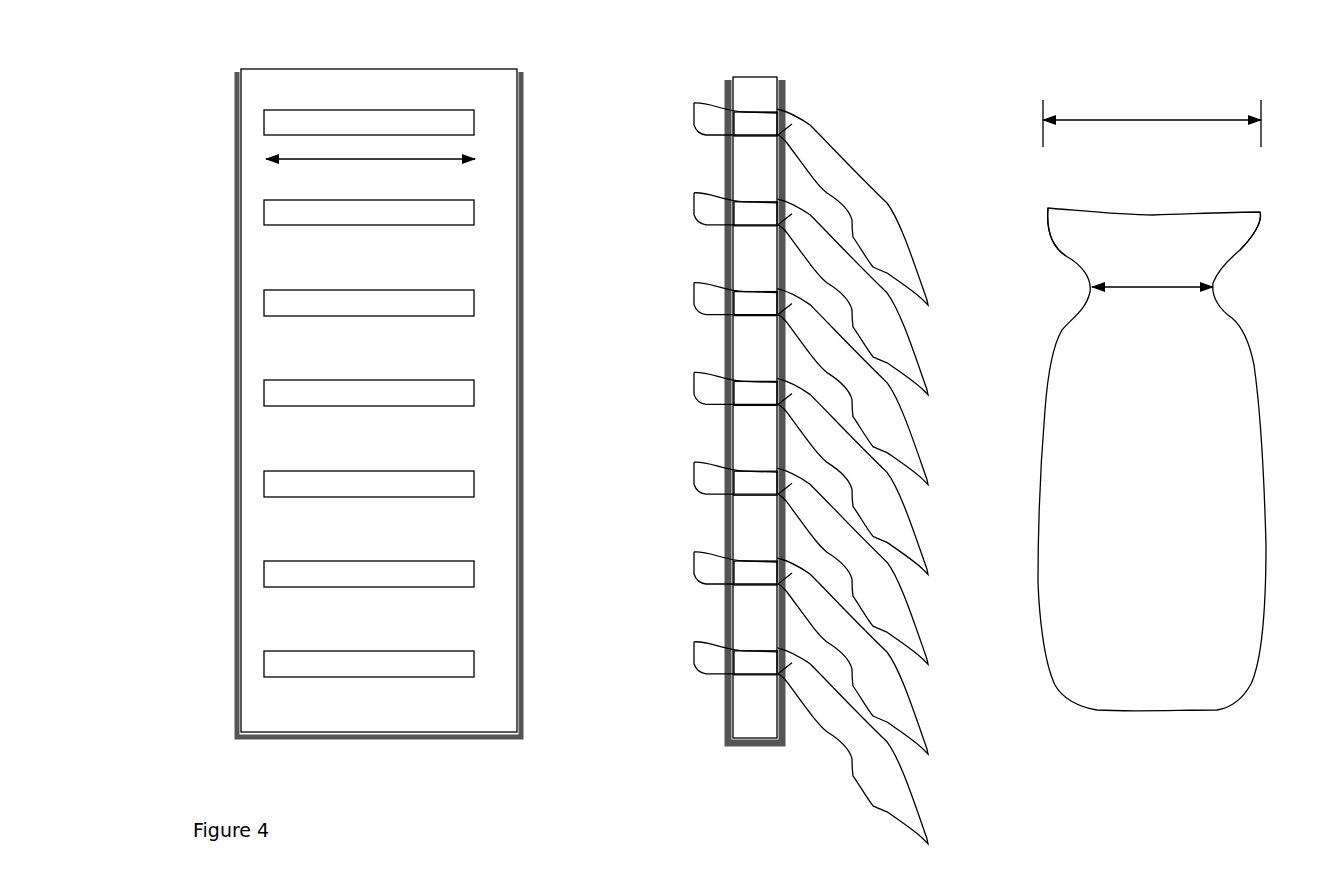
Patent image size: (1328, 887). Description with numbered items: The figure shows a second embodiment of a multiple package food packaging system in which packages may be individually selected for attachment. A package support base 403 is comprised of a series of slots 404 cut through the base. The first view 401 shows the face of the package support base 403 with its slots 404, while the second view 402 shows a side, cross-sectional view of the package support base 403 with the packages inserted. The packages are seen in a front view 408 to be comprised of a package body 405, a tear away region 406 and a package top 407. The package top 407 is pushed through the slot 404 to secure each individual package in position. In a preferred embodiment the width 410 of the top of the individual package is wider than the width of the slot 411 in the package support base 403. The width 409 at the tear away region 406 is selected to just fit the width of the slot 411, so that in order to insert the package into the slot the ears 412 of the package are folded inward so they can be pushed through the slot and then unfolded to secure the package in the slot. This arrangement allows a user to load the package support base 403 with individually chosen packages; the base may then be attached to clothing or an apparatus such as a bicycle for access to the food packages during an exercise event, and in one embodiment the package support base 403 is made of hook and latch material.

The first view 401 is at (376, 418).
The second view 402 is at (966, 458).
The package support base 403 is at (518, 167).
The slots 404 is at (450, 222).
The package body 405 is at (843, 173).
The tear away region 406 is at (790, 118).
The package top 407 is at (703, 130).
The front view 408 is at (1114, 432).
The width at the tear away region 409 is at (1075, 290).
The width of the top of the individual package 410 is at (1152, 117).
The width of the slot 411 is at (283, 178).
The ears 412 is at (1040, 237).